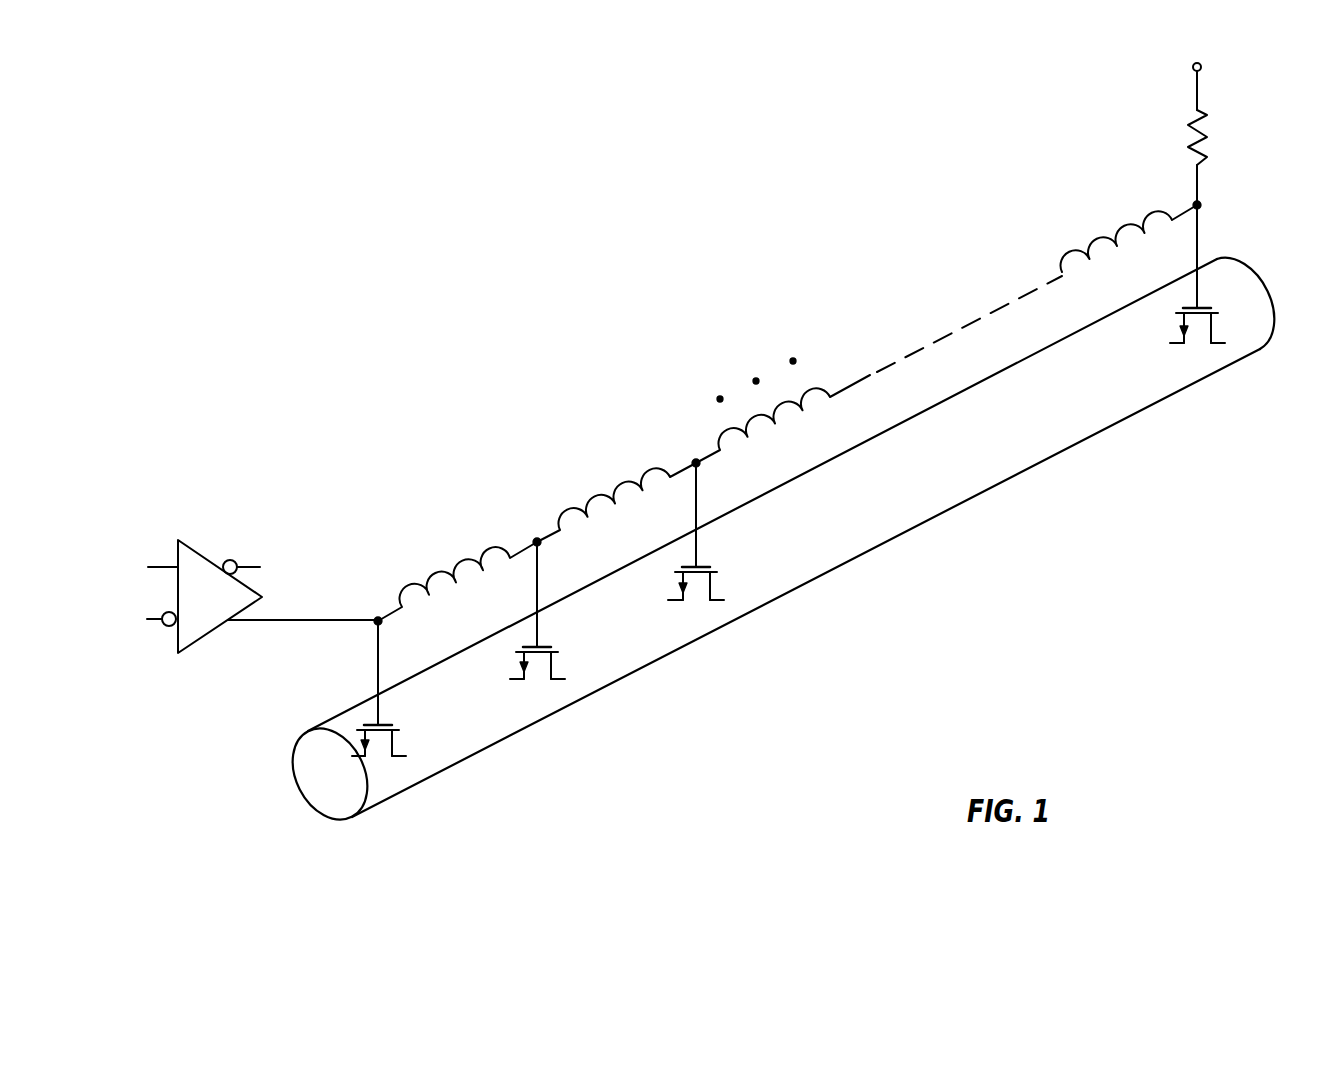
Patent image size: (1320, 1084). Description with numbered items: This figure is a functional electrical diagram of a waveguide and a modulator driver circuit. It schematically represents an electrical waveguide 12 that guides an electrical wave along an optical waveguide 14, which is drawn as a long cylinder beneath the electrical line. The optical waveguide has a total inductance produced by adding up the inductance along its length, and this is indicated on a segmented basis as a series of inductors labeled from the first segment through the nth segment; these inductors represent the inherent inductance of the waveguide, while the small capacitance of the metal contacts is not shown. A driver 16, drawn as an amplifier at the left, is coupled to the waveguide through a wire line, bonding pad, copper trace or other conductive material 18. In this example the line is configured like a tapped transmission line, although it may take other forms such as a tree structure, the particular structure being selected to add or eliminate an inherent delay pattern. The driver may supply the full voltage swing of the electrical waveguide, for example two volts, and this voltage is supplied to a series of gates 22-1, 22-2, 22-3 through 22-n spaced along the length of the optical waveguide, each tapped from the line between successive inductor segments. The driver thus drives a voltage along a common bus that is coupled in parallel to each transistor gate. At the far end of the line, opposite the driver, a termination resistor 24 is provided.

The electrical waveguide 12 is at (930, 344).
The optical waveguide 14 is at (962, 503).
The driver 16 is at (205, 556).
The conductive material 18 is at (302, 622).
The gate 22-1 is at (406, 745).
The gate 22-2 is at (565, 665).
The gate 22-3 is at (724, 585).
The gate 22-n is at (1225, 330).
The termination resistor 24 is at (1207, 136).